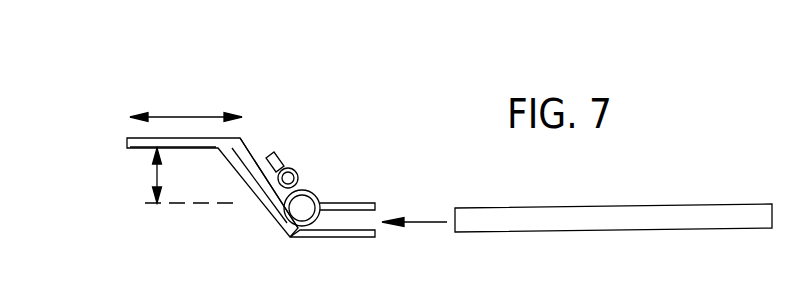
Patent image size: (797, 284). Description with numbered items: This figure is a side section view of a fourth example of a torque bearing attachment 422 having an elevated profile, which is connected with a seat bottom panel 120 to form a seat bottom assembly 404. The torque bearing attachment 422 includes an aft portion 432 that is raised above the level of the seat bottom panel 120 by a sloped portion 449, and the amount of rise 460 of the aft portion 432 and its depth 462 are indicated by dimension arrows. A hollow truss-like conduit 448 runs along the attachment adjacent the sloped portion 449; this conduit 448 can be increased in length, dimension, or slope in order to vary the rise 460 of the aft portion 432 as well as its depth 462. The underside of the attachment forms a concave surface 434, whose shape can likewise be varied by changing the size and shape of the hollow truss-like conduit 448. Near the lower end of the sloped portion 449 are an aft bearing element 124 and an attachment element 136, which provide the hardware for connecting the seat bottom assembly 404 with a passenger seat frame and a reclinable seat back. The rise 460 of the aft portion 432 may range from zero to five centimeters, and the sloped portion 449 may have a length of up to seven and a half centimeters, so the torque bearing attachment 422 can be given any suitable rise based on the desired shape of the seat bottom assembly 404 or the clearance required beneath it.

The torque bearing attachment 422 is at (100, 78).
The aft portion 432 is at (147, 139).
The concave surface 434 is at (197, 148).
The rise 460 is at (150, 178).
The depth 462 is at (187, 117).
The sloped portion 449 is at (248, 155).
The hollow truss-like conduit 448 is at (257, 167).
The attachment element 136 is at (300, 180).
The aft bearing element 124 is at (310, 217).
The seat bottom panel 120 is at (683, 190).
The seat bottom assembly 404 is at (628, 134).